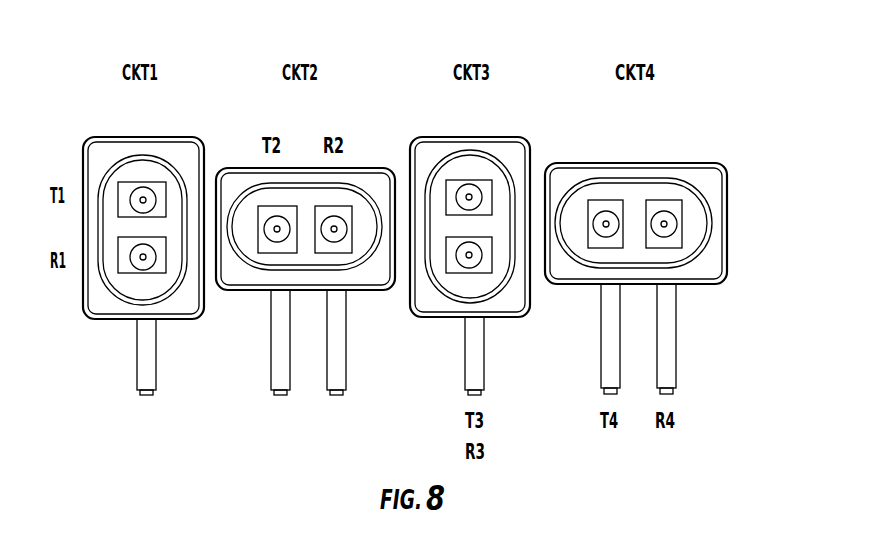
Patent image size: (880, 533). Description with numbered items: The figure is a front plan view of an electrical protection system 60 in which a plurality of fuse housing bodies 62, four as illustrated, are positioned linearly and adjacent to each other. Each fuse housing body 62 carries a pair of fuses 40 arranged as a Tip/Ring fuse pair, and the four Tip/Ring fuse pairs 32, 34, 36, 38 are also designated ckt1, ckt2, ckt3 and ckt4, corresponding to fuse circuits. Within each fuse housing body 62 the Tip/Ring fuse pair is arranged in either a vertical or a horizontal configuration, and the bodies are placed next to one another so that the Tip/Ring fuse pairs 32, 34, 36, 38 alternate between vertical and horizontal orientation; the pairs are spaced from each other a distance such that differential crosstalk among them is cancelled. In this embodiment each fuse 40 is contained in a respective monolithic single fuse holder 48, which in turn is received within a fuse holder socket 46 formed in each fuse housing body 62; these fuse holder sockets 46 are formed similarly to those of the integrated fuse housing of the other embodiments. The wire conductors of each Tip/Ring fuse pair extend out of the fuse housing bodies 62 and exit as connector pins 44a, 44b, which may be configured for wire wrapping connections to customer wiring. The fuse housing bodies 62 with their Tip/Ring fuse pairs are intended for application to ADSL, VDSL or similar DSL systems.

The electrical protection system 60 is at (378, 61).
The fuse housing body 62 is at (83, 180).
The Tip/Ring fuse pair 32 is at (100, 290).
The Tip/Ring fuse pair 34 is at (270, 272).
The Tip/Ring fuse pair 36 is at (450, 300).
The Tip/Ring fuse pair 38 is at (700, 255).
The fuse holder socket 46 is at (245, 212).
The single fuse holder 48 is at (125, 187).
The fuse 40 is at (143, 201).
The connector pin 44a is at (280, 375).
The connector pin 44b is at (143, 357).